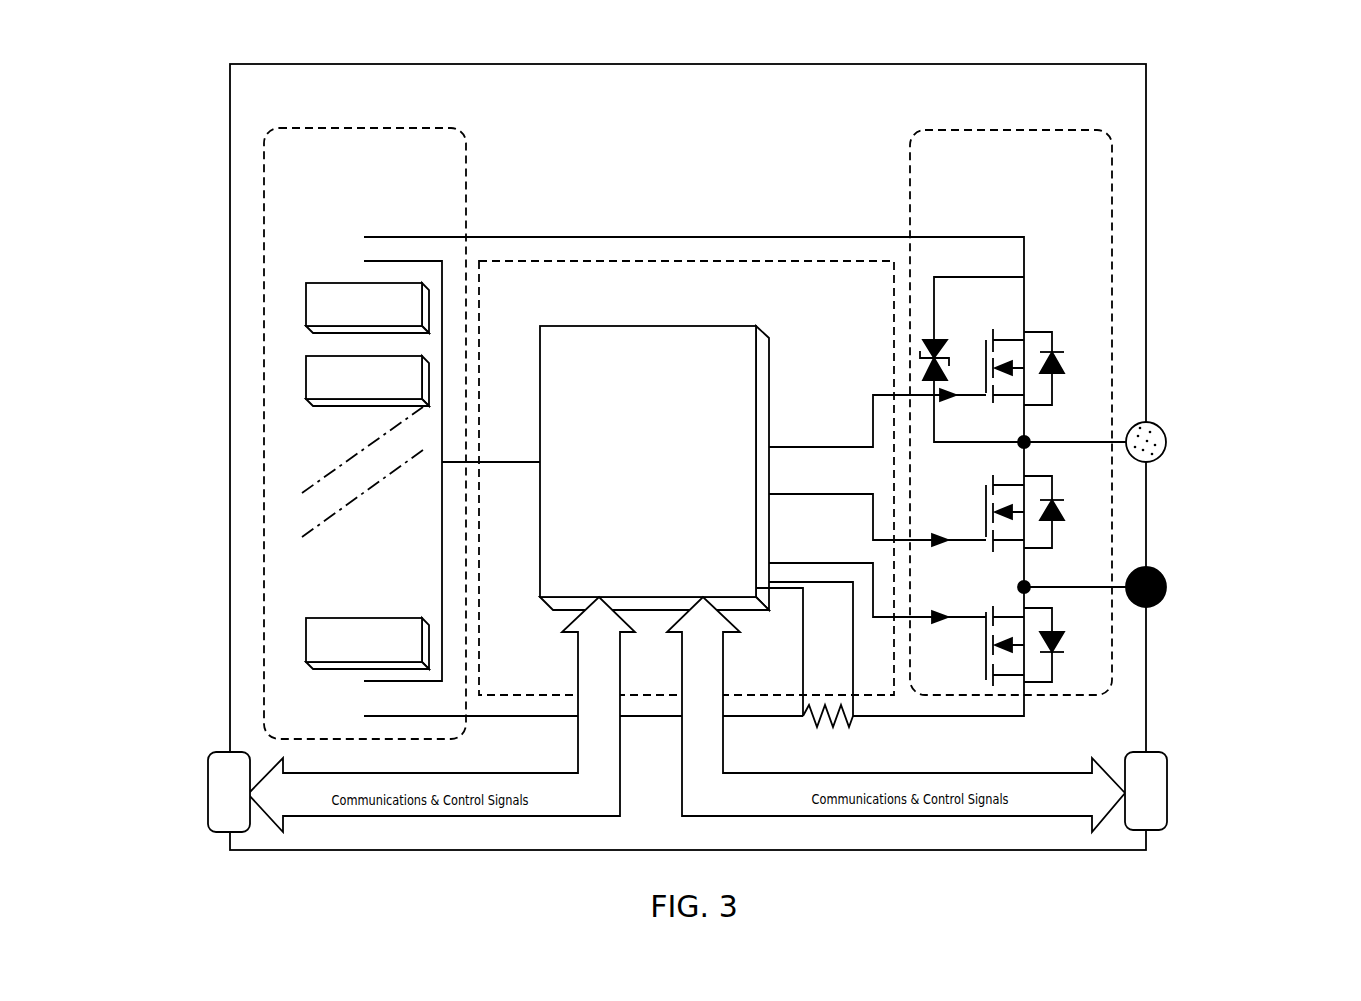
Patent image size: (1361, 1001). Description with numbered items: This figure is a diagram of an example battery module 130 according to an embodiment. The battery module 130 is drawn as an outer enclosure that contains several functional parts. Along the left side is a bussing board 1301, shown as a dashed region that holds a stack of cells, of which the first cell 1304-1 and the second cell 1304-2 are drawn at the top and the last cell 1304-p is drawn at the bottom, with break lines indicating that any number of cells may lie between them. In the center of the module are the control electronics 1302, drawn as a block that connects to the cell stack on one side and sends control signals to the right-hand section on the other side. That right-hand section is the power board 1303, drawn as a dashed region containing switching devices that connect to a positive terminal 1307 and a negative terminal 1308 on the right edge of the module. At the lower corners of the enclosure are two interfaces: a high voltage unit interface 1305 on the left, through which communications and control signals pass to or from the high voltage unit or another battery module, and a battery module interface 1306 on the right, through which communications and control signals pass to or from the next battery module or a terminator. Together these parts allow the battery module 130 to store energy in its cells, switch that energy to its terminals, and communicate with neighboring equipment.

The battery module 130 is at (138, 106).
The bussing board 1301 is at (264, 222).
The control electronics 1302 is at (688, 260).
The power board 1303 is at (1112, 170).
The cell 1304-1 is at (367, 308).
The cell 1304-2 is at (367, 381).
The cell 1304-p is at (367, 643).
The high voltage unit interface 1305 is at (220, 752).
The battery module interface 1306 is at (1155, 752).
The positive terminal 1307 is at (1162, 428).
The negative terminal 1308 is at (1160, 572).